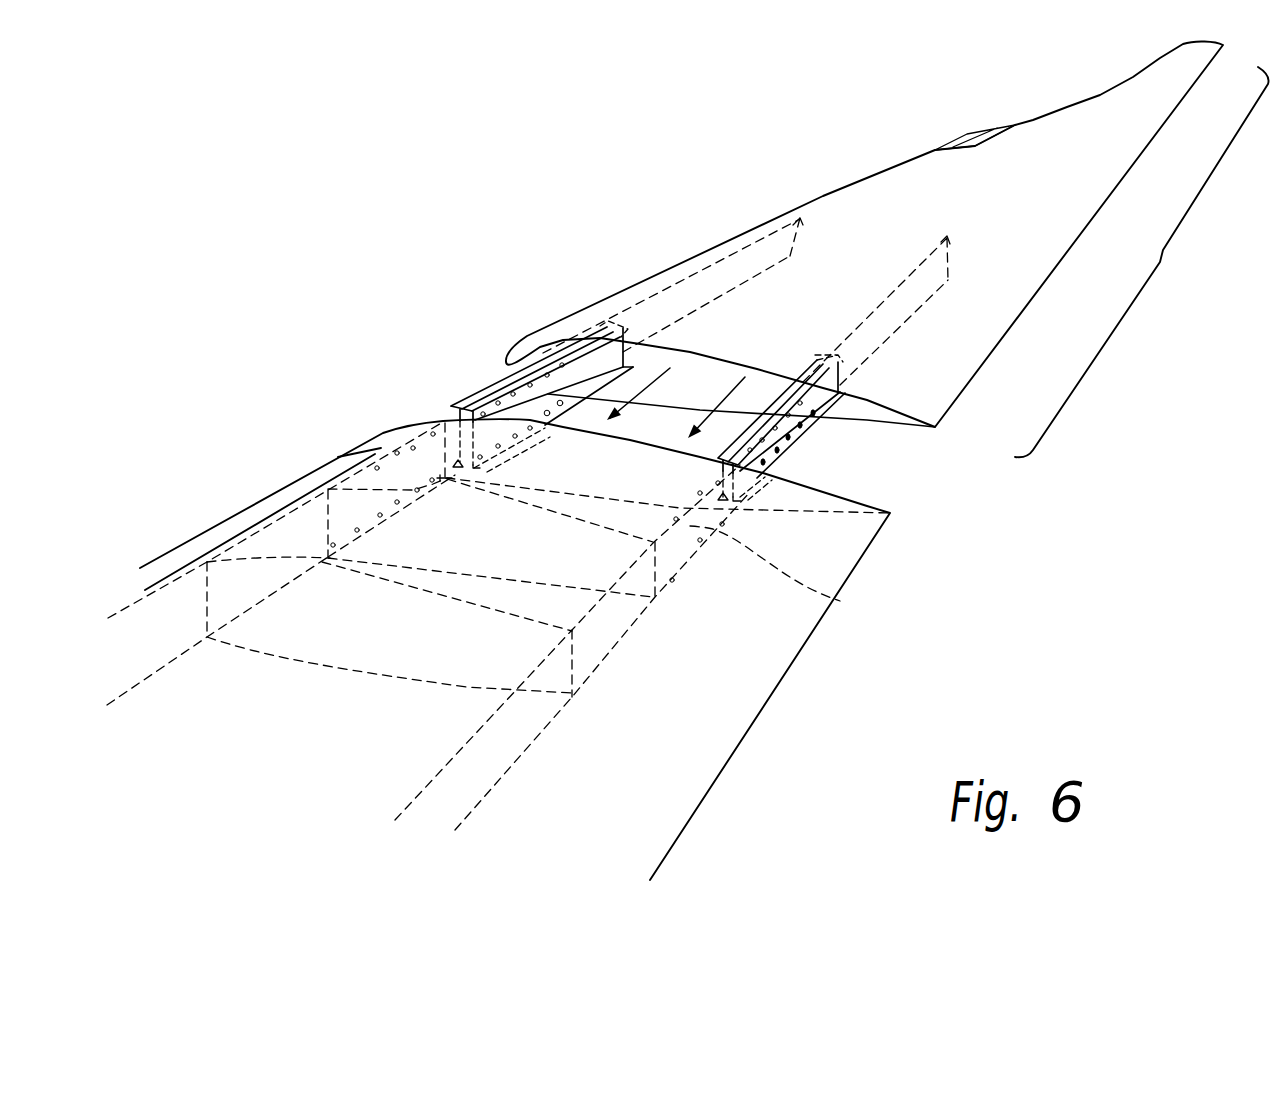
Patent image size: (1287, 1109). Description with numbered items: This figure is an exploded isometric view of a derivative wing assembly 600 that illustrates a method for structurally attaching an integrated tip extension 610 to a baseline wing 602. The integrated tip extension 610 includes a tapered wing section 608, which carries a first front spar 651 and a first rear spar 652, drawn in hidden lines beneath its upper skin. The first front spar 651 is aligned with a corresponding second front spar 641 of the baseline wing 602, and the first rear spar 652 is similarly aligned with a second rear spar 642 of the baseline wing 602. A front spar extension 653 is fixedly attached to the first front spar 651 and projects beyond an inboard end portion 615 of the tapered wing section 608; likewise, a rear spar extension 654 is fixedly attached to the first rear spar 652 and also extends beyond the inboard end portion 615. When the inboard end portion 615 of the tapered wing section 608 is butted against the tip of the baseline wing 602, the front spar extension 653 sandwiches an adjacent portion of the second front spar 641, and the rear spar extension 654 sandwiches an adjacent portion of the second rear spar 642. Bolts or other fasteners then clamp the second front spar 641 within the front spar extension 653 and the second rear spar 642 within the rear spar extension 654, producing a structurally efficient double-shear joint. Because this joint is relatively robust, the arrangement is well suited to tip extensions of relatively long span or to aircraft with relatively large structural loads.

The derivative wing assembly 600 is at (382, 226).
The baseline wing 602 is at (301, 749).
The tapered wing section 608 is at (985, 318).
The integrated tip extension 610 is at (1160, 262).
The inboard end portion 615 is at (870, 412).
The second front spar 641 is at (348, 454).
The second rear spar 642 is at (842, 602).
The first front spar 651 is at (712, 268).
The first rear spar 652 is at (897, 293).
The front spar extension 653 is at (477, 405).
The rear spar extension 654 is at (790, 450).